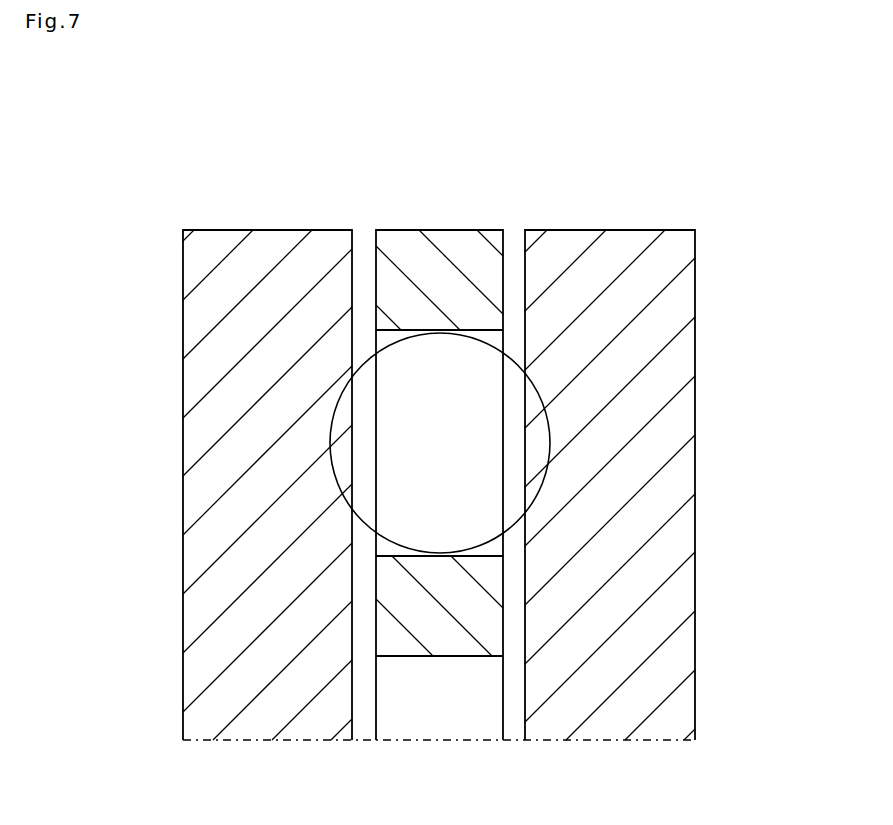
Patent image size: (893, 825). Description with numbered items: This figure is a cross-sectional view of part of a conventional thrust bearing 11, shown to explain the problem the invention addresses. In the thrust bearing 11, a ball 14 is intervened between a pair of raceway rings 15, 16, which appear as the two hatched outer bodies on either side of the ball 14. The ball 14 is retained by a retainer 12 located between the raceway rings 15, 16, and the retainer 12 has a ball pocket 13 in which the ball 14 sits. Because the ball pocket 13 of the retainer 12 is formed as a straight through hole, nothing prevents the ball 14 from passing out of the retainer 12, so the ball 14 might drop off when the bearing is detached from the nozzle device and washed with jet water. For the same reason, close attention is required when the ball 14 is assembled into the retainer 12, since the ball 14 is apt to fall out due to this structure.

The thrust bearing 11 is at (733, 221).
The retainer 12 is at (434, 265).
The ball pocket 13 is at (378, 345).
The ball 14 is at (522, 410).
The raceway ring 15 is at (200, 473).
The raceway ring 16 is at (655, 455).